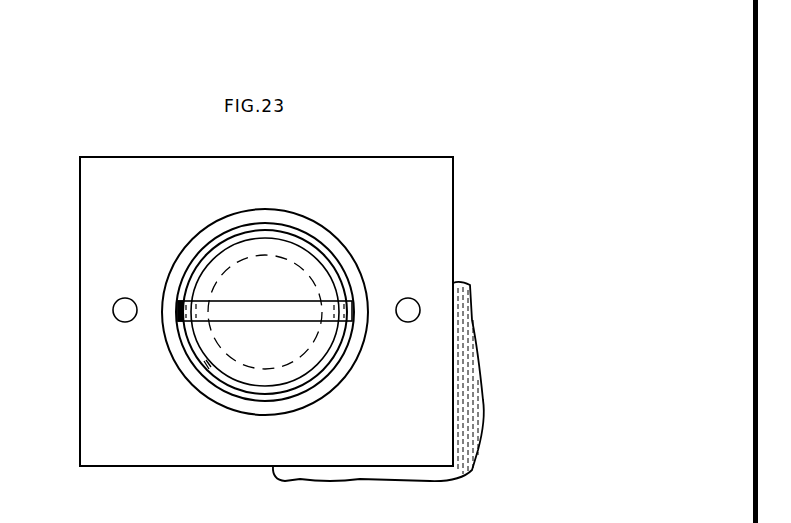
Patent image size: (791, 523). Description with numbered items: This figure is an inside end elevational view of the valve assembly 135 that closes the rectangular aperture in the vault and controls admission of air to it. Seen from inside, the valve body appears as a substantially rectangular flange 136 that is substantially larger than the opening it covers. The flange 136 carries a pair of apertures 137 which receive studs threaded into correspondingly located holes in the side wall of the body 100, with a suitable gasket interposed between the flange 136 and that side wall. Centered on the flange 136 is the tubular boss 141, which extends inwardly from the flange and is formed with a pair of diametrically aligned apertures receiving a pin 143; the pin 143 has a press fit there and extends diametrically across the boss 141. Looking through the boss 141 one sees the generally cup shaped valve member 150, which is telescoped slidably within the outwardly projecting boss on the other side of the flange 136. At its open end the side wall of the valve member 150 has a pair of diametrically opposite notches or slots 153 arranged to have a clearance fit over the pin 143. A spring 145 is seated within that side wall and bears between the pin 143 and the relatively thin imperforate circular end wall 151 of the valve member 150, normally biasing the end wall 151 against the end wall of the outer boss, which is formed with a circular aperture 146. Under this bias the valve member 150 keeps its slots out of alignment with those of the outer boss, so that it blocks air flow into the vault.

The body 100 is at (464, 457).
The valve assembly 135 is at (317, 154).
The flange 136 is at (80, 292).
The apertures 137 is at (127, 304).
The tubular boss 141 is at (190, 258).
The pin 143 is at (368, 293).
The spring 145 is at (212, 267).
The circular aperture 146 is at (252, 366).
The valve member 150 is at (333, 228).
The end wall 151 is at (322, 275).
The notches or slots 153 is at (182, 300).